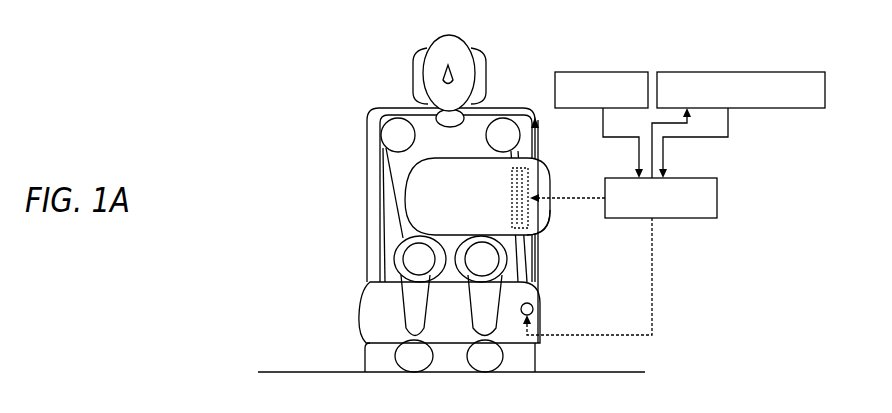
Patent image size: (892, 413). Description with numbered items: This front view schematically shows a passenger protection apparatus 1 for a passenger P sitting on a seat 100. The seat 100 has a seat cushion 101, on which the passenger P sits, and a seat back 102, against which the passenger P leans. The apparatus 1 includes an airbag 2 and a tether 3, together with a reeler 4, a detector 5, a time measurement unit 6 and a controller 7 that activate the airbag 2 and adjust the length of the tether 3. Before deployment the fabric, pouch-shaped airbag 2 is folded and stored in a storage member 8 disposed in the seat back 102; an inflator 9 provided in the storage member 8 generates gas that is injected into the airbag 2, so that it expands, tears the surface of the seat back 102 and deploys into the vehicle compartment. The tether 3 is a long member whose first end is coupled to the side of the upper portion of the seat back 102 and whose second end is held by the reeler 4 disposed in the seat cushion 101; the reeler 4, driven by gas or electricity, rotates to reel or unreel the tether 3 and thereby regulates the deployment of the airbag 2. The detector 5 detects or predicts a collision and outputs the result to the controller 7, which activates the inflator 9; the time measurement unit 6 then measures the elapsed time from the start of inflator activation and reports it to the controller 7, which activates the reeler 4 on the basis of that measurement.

The passenger protection apparatus 1 is at (278, 117).
The airbag 2 is at (372, 187).
The tether 3 is at (540, 274).
The reeler 4 is at (536, 312).
The detector 5 is at (630, 71).
The time measurement unit 6 is at (736, 71).
The controller 7 is at (682, 177).
The storage member 8 is at (541, 225).
The inflator 9 is at (541, 209).
The seat 100 is at (303, 262).
The seat cushion 101 is at (359, 312).
The seat back 102 is at (366, 271).
The passenger P is at (466, 42).